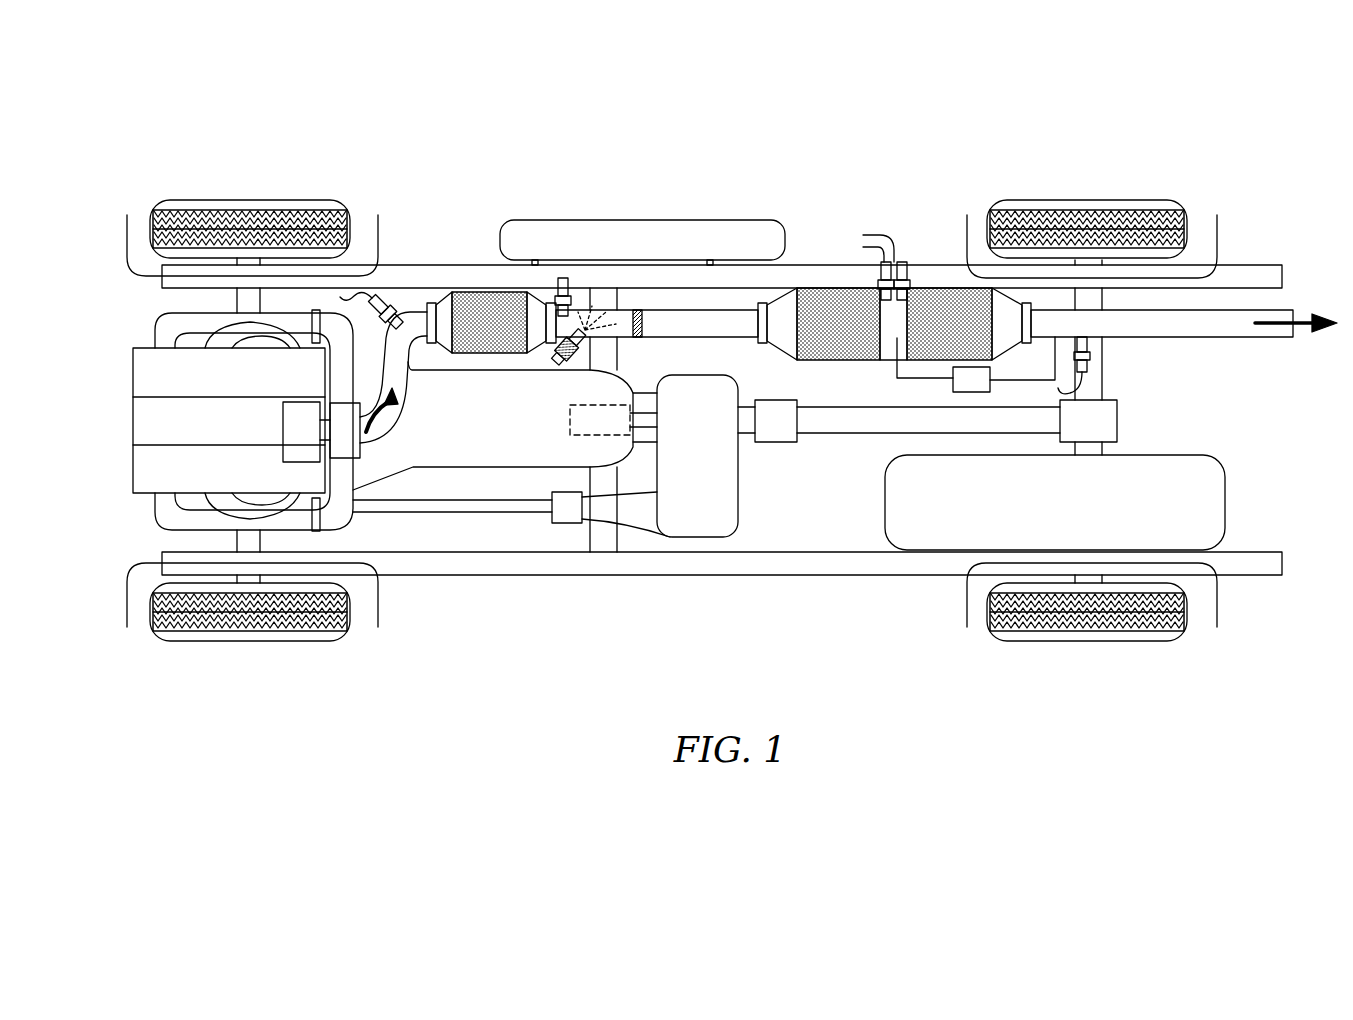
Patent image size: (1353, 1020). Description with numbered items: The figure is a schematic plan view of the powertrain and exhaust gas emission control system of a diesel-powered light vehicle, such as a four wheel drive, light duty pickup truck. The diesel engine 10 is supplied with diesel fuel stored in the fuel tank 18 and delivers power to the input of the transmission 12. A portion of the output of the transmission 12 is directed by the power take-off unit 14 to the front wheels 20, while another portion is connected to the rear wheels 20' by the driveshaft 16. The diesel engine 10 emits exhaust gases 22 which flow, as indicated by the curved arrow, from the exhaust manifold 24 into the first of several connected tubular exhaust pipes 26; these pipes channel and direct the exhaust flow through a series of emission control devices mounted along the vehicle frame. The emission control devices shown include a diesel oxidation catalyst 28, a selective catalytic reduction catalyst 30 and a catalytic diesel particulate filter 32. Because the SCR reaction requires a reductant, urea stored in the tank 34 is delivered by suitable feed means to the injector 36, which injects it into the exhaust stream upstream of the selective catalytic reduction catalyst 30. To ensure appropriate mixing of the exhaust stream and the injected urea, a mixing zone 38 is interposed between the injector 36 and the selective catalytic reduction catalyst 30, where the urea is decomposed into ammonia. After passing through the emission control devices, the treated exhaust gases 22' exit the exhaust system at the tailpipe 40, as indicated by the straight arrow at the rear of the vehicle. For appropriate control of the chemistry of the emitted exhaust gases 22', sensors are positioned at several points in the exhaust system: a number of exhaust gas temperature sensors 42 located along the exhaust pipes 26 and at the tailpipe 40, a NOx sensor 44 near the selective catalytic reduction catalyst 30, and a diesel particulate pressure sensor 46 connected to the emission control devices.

The diesel engine 10 is at (130, 420).
The transmission 12 is at (480, 470).
The power take-off unit 14 is at (700, 537).
The driveshaft 16 is at (818, 430).
The fuel tank 18 is at (1228, 495).
The front wheels 20 is at (250, 420).
The rear wheels 20' is at (1087, 420).
The exhaust gases 22 is at (406, 412).
The treated exhaust gases 22' is at (1304, 271).
The exhaust manifold 24 is at (360, 452).
The tubular exhaust pipes 26 is at (405, 310).
The diesel oxidation catalyst 28 is at (470, 292).
The selective catalytic reduction catalyst 30 is at (825, 288).
The catalytic diesel particulate filter 32 is at (950, 288).
The urea tank 34 is at (595, 220).
The urea injector 36 is at (595, 347).
The mixing zone 38 is at (665, 310).
The tailpipe 40 is at (1197, 338).
The exhaust gas temperature sensors 42 is at (378, 292).
The NOx sensor 44 is at (863, 241).
The diesel particulate pressure sensor 46 is at (958, 394).